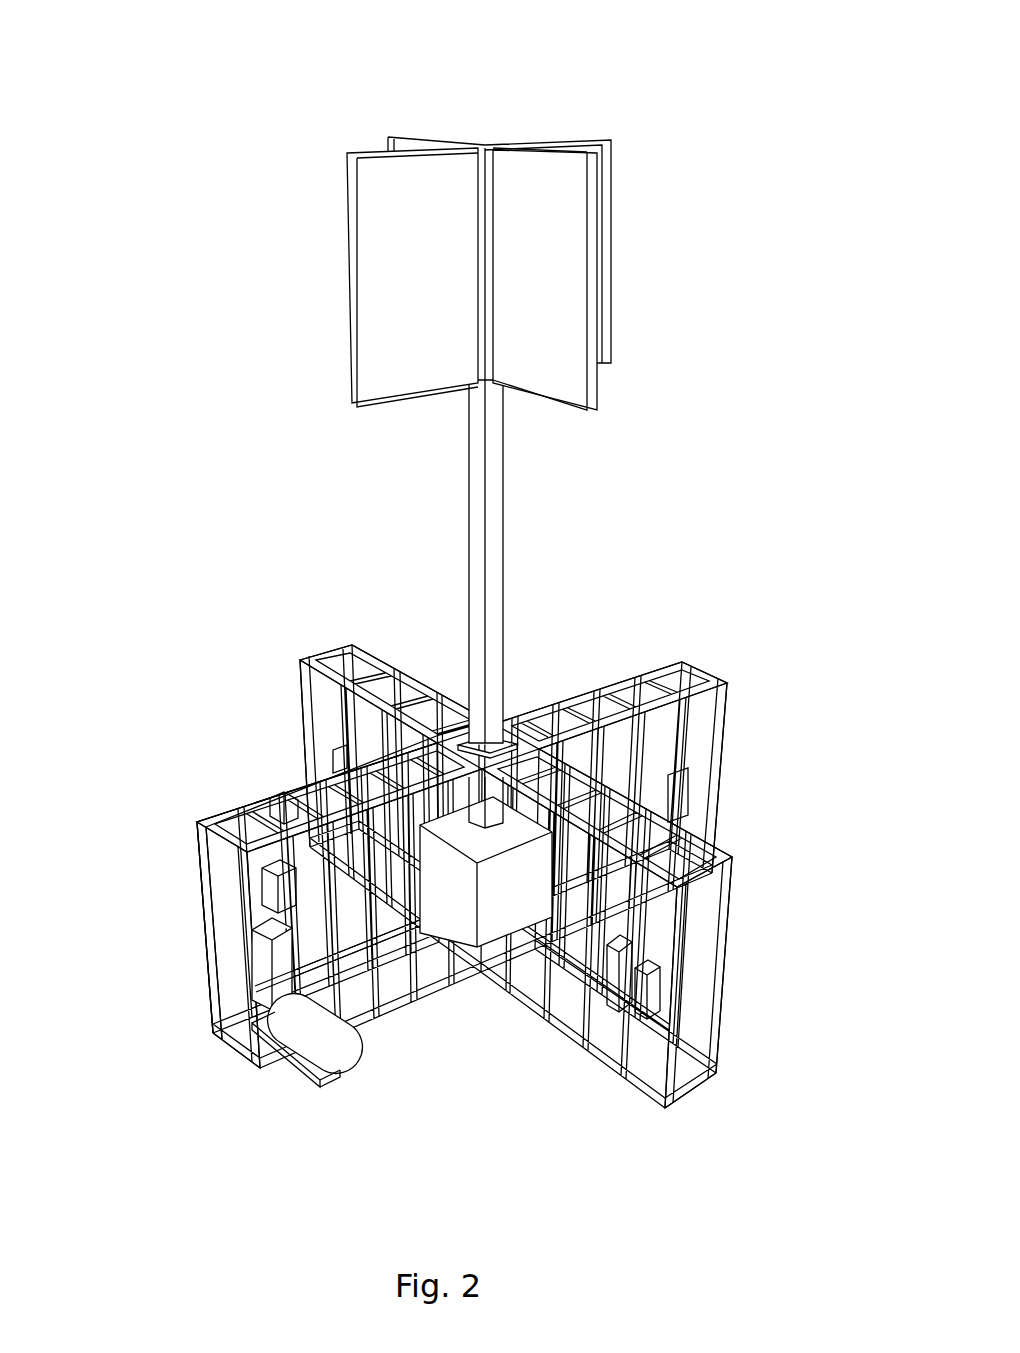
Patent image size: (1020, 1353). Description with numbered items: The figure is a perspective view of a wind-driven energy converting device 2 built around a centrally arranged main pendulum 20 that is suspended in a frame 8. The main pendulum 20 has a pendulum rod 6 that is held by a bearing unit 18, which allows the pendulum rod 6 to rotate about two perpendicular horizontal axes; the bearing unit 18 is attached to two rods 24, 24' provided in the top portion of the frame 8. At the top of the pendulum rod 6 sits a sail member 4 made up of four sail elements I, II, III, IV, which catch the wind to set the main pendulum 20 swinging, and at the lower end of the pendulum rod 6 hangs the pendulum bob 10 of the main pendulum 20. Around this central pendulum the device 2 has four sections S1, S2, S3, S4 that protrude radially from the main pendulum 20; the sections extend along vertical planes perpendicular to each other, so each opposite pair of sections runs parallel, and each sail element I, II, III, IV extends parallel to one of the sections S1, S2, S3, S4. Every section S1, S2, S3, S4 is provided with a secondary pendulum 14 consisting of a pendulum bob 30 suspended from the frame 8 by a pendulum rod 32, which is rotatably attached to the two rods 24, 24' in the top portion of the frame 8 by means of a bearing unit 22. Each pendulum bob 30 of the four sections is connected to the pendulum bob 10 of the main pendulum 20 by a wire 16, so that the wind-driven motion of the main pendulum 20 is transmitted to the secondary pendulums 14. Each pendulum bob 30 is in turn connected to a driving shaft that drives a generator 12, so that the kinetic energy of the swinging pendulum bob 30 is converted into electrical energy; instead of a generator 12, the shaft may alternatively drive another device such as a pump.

The wind-driven energy converting device 2 is at (137, 100).
The sail member 4 is at (610, 82).
The sail element I is at (595, 240).
The sail element II is at (565, 133).
The sail element III is at (415, 133).
The sail element IV is at (348, 222).
The pendulum rod 6 is at (469, 500).
The frame 8 is at (568, 700).
The pendulum bob 10 is at (468, 925).
The generator 12 is at (340, 1045).
The secondary pendulum 14 is at (262, 905).
The wire 16 is at (420, 950).
The bearing unit 18 is at (465, 725).
The main pendulum 20 is at (408, 580).
The bearing unit 22 is at (262, 800).
The rod 24 is at (279, 770).
The rod 24' is at (199, 900).
The pendulum bob 30 is at (268, 980).
The pendulum rod 32 is at (282, 872).
The section S1 is at (737, 848).
The section S2 is at (690, 645).
The section S3 is at (285, 668).
The section S4 is at (197, 945).